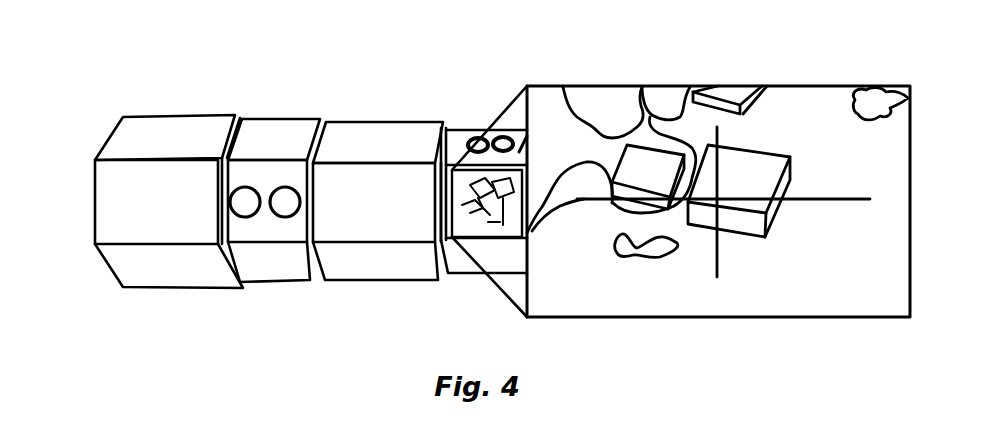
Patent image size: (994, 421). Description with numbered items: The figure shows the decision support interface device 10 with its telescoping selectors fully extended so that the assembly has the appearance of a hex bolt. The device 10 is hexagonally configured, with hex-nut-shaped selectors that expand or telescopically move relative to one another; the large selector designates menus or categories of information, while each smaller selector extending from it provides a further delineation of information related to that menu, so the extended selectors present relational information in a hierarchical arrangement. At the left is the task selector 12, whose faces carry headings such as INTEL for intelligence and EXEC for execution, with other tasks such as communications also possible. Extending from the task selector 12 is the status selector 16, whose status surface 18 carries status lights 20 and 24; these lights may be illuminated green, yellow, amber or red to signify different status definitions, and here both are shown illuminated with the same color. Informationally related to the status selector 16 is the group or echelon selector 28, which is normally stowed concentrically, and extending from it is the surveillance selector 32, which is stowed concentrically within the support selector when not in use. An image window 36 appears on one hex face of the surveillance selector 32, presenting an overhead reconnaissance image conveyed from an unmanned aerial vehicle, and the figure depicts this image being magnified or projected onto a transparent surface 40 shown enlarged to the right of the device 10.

The decision support interface device 10 is at (165, 79).
The task selector 12 is at (112, 138).
The status selector 16 is at (300, 137).
The status surface 18 is at (274, 236).
The status light 20 is at (250, 186).
The status light 24 is at (286, 208).
The echelon selector 28 is at (346, 124).
The surveillance selector 32 is at (476, 128).
The image window 36 is at (461, 214).
The enlarged view of image panel 40 is at (656, 304).